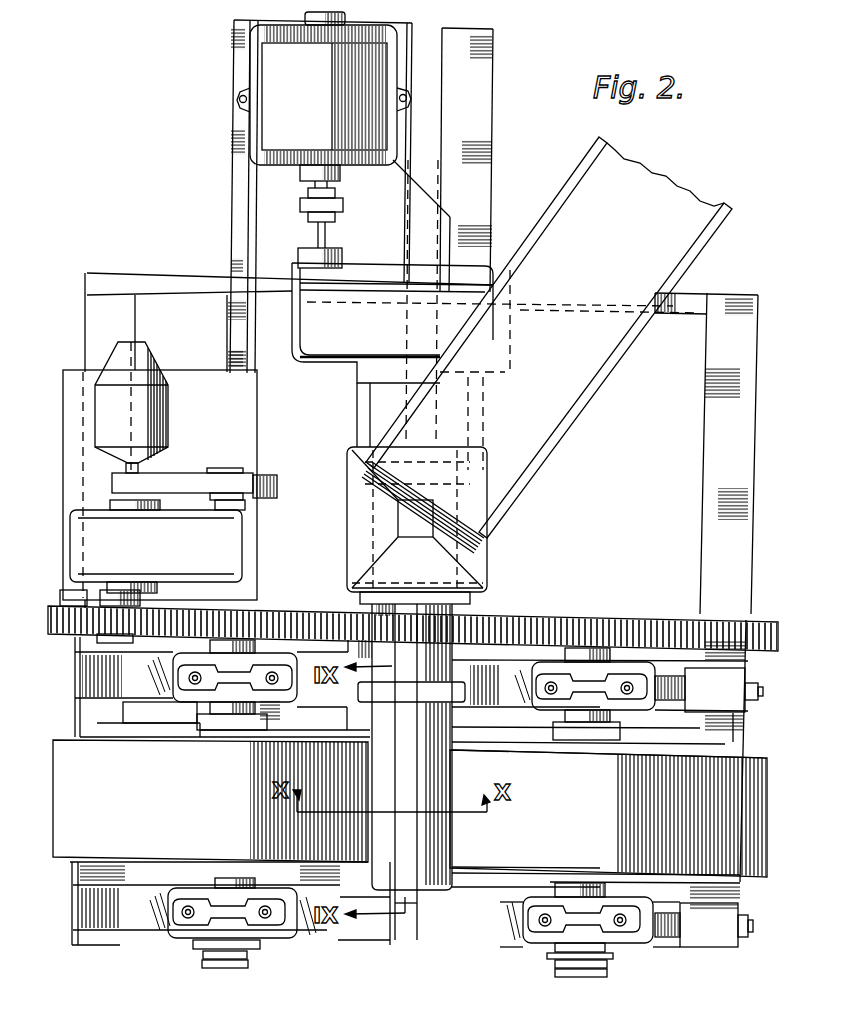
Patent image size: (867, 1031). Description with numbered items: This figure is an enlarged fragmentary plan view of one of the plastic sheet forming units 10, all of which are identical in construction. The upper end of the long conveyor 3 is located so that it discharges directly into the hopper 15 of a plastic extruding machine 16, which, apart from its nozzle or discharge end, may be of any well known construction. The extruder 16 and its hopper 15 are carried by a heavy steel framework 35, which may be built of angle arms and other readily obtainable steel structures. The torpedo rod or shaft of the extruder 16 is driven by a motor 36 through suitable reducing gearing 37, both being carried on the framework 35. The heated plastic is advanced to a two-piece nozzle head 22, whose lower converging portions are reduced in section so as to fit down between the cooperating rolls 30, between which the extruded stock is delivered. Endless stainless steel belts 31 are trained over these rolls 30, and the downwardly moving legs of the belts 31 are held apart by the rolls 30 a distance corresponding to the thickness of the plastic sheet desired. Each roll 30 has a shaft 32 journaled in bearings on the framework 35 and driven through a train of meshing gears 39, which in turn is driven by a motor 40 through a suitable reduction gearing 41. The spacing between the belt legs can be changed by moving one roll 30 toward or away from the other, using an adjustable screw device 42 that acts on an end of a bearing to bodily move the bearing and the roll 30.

The long conveyor 3 is at (567, 419).
The sheet forming unit 10 is at (440, 852).
The hopper 15 is at (478, 569).
The plastic extruding machine 16 is at (486, 676).
The two-piece nozzle head 22 is at (380, 778).
The rolls 30 is at (613, 762).
The endless stainless steel belts 31 is at (68, 792).
The shaft 32 is at (200, 892).
The steel framework 35 is at (727, 488).
The motor 36 is at (276, 108).
The reducing gearing 37 is at (375, 300).
The train of meshing gears 39 is at (301, 606).
The motor 40 is at (155, 430).
The reduction gearing 41 is at (220, 548).
The adjustable screw device 42 is at (710, 690).